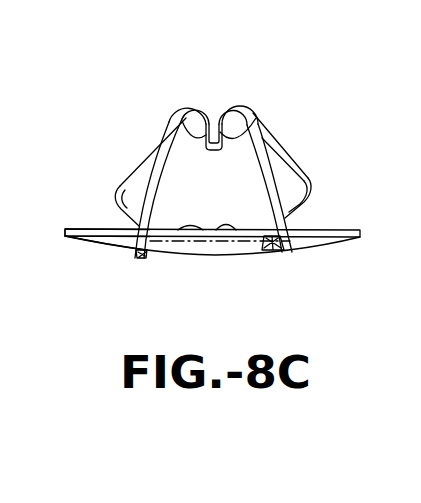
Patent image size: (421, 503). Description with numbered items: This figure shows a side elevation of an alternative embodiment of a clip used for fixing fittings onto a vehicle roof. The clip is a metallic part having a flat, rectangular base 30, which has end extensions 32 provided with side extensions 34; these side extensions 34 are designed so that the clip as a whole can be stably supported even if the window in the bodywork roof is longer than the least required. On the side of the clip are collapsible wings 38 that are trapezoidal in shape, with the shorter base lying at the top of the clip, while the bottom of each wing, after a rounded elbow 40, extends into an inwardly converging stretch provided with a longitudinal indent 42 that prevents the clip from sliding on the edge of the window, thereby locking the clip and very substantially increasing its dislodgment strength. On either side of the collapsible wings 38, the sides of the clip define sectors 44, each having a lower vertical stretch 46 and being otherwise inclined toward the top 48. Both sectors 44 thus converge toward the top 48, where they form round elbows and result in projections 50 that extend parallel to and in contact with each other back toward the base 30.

The base 30 is at (211, 254).
The end extension 32 is at (90, 274).
The side extension 34 is at (85, 238).
The collapsible wing 38 is at (222, 165).
The rounded elbow 40 is at (113, 182).
The longitudinal indent 42 is at (130, 212).
The sector 44 is at (143, 160).
The lower vertical stretch 46 is at (138, 246).
The top 48 is at (231, 106).
The projection 50 is at (176, 119).